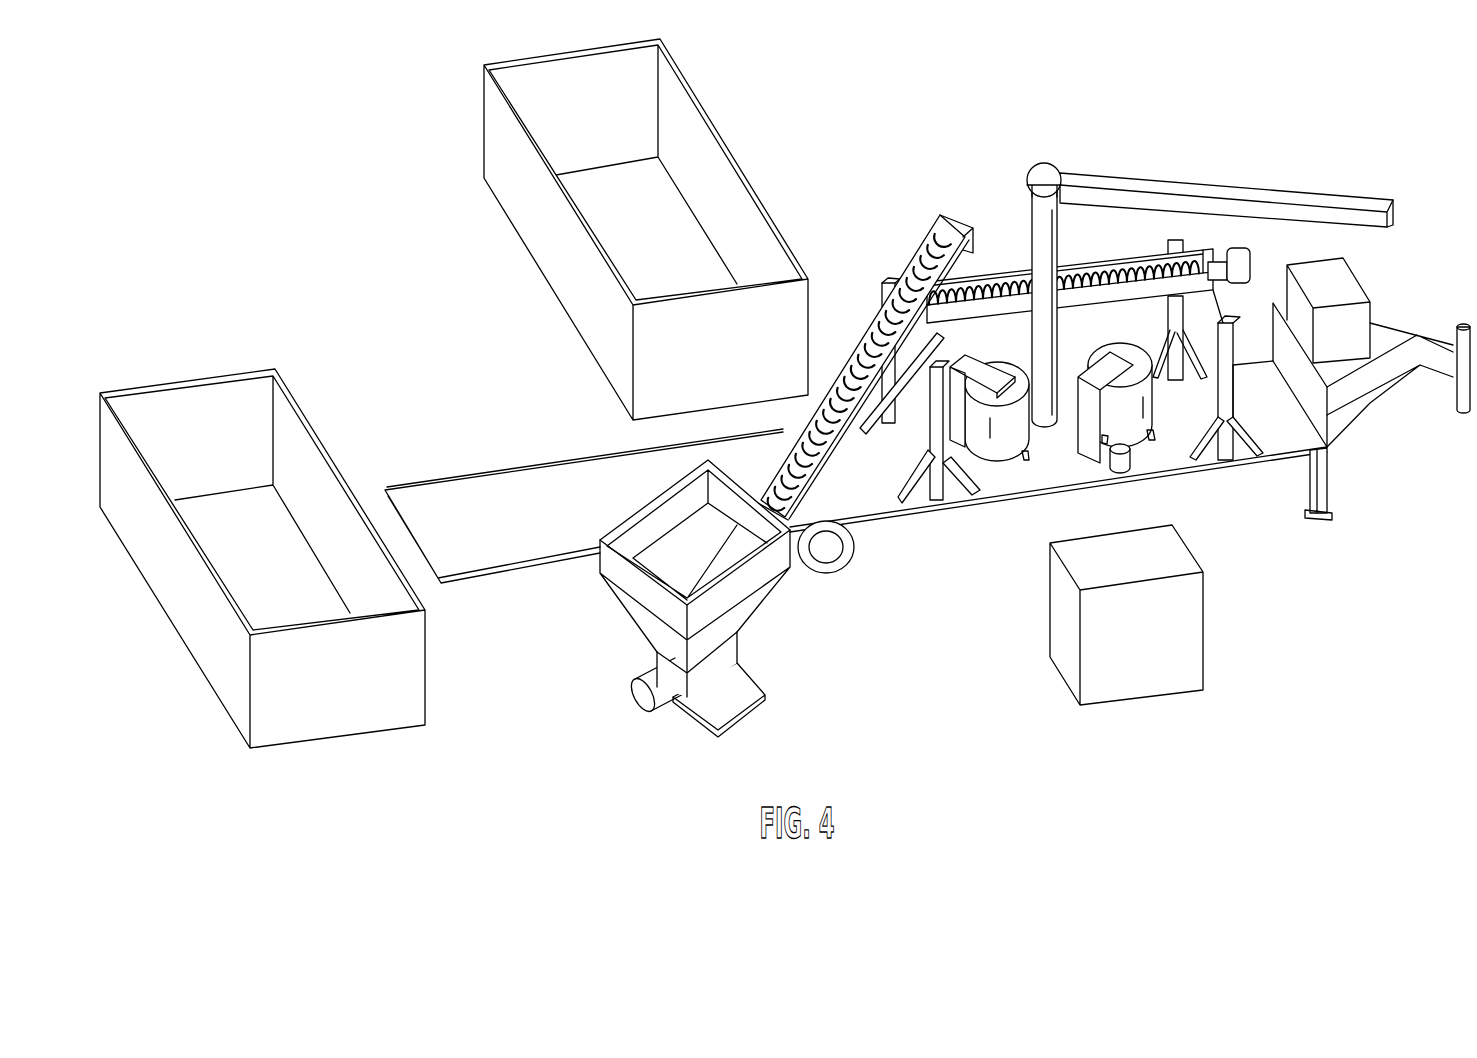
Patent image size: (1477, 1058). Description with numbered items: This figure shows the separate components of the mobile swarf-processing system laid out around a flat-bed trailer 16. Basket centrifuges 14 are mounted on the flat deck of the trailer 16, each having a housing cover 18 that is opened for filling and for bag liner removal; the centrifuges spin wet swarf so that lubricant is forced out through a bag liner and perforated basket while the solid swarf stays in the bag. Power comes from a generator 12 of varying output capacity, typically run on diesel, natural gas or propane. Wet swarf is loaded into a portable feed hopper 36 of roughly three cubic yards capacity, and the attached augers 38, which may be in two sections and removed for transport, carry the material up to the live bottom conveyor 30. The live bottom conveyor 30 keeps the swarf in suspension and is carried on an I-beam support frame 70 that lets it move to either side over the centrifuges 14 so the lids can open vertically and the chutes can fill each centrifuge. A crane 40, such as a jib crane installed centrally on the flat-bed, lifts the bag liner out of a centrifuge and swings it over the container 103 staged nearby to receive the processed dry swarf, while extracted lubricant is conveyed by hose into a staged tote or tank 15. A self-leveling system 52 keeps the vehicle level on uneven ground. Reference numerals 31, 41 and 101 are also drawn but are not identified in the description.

The generator 12 is at (1337, 282).
The basket centrifuge 14 is at (1003, 437).
The tote or tank 15 is at (1175, 625).
The trailer 16 is at (500, 535).
The housing cover 18 is at (1140, 358).
The live bottom conveyor 30 is at (1212, 298).
The inclined conveyor discharge 31 is at (970, 267).
The portable feed hopper 36 is at (665, 565).
The auger 38 is at (865, 320).
The crane 40 is at (1068, 154).
The pipe arm 41 is at (1158, 180).
The self-leveling system 52 is at (1322, 487).
The I-beam support frame 70 is at (935, 487).
The first container 101 is at (397, 705).
The container 103 is at (712, 173).